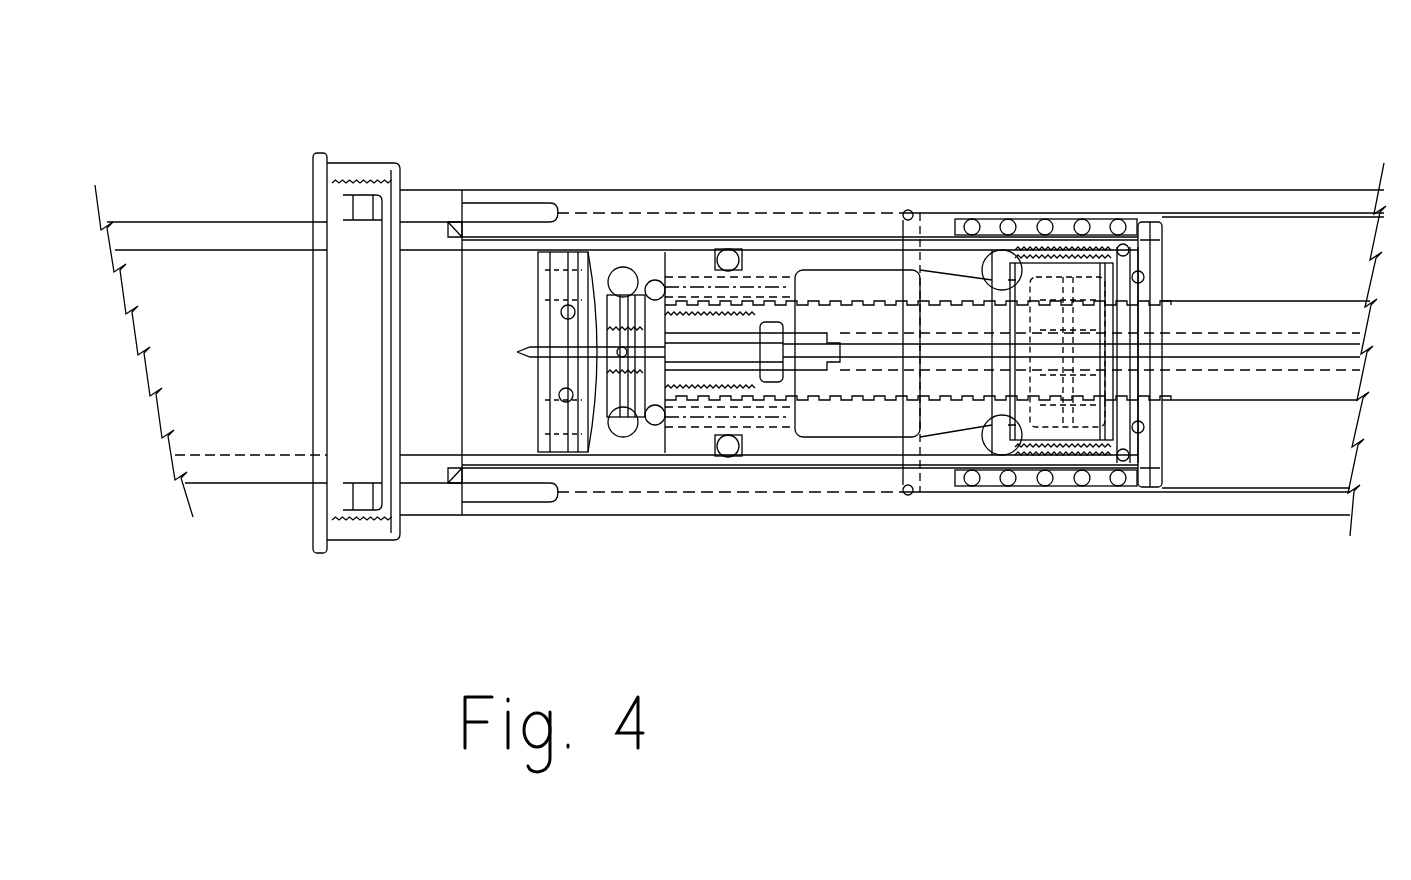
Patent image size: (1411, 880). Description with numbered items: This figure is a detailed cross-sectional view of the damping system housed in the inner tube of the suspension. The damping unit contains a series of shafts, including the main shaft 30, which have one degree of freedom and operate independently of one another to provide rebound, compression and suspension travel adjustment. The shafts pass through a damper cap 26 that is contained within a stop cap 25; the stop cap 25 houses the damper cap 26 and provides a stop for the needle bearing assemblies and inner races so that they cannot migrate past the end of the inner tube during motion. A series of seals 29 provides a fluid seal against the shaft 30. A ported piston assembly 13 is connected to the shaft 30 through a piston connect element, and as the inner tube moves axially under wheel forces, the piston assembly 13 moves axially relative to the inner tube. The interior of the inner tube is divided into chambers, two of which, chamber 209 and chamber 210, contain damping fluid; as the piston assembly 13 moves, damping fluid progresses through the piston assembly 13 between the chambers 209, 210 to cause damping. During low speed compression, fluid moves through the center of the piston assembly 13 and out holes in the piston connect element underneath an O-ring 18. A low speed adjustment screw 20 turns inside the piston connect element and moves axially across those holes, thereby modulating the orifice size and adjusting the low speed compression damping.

The chamber 210 is at (247, 307).
The chamber 209 is at (643, 443).
The ported piston assembly 13 is at (565, 250).
The O-ring 18 is at (625, 275).
The low speed adjustment screw 20 is at (660, 362).
The damper cap 26 is at (1065, 267).
The seals 29 is at (1090, 418).
The stop cap 25 is at (1153, 247).
The shaft 30 is at (1329, 299).